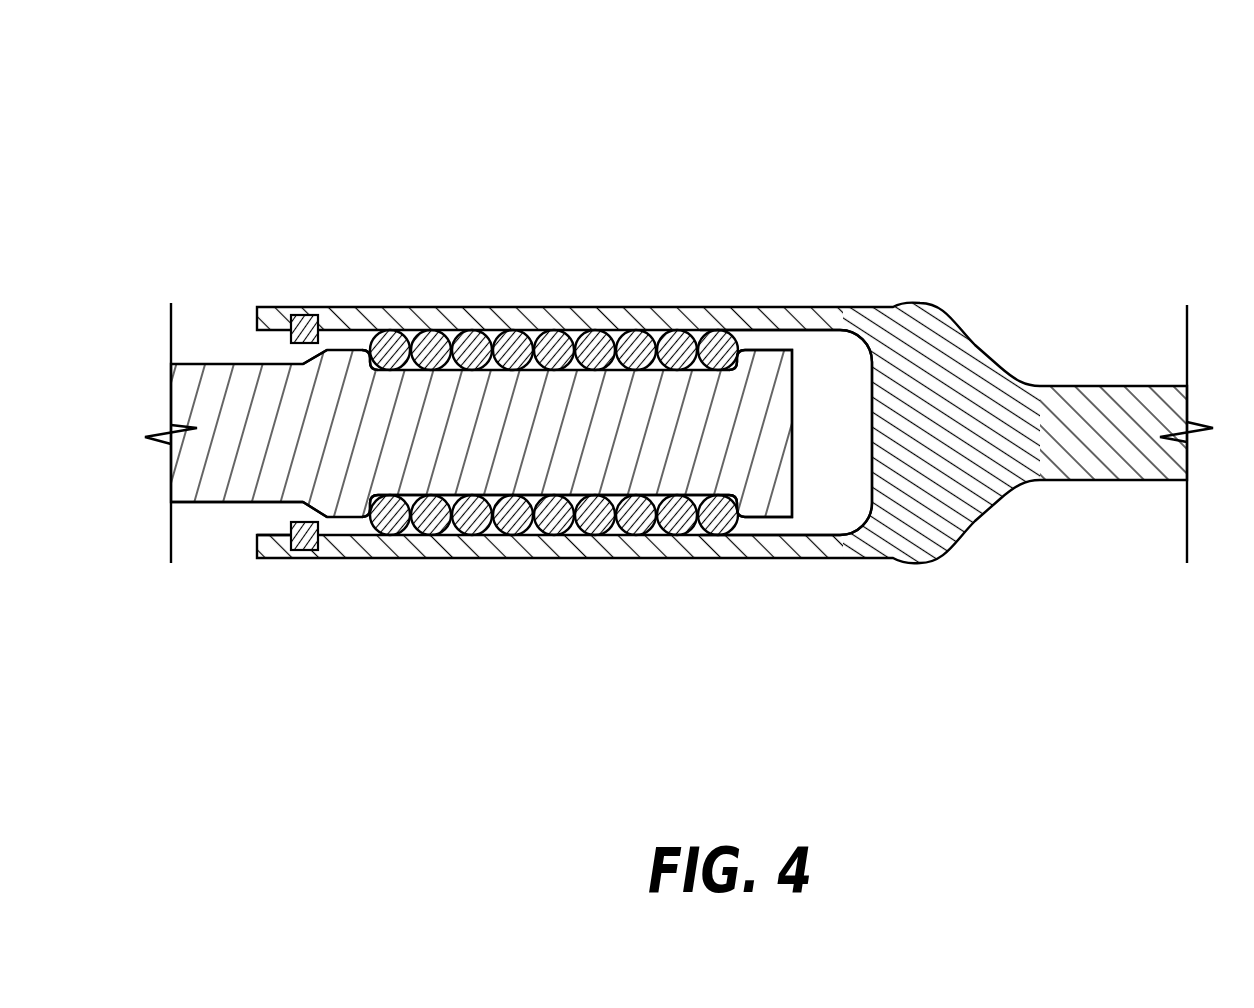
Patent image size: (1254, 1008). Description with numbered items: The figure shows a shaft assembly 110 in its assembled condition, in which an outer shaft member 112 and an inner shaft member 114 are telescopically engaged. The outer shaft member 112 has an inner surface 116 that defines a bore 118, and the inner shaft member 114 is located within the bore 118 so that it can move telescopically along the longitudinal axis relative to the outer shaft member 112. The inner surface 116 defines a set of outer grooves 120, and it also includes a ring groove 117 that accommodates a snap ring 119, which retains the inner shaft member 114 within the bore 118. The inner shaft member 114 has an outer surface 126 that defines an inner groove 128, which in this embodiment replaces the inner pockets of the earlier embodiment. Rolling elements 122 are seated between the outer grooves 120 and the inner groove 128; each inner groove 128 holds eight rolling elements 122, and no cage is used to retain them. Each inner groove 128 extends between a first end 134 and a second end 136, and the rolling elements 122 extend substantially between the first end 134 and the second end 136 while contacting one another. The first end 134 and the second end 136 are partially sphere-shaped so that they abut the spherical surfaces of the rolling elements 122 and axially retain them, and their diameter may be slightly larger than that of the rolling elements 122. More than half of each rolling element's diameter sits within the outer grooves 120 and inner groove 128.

The shaft assembly 110 is at (670, 349).
The outer shaft member 112 is at (352, 300).
The inner shaft member 114 is at (247, 366).
The inner surface 116 is at (405, 330).
The ring groove 117 is at (303, 552).
The bore 118 is at (845, 438).
The snap ring 119 is at (290, 525).
The outer grooves 120 is at (580, 332).
The rolling elements 122 is at (731, 521).
The outer surface 126 is at (338, 524).
The inner groove 128 is at (537, 497).
The first end 134 is at (367, 533).
The second end 136 is at (752, 495).